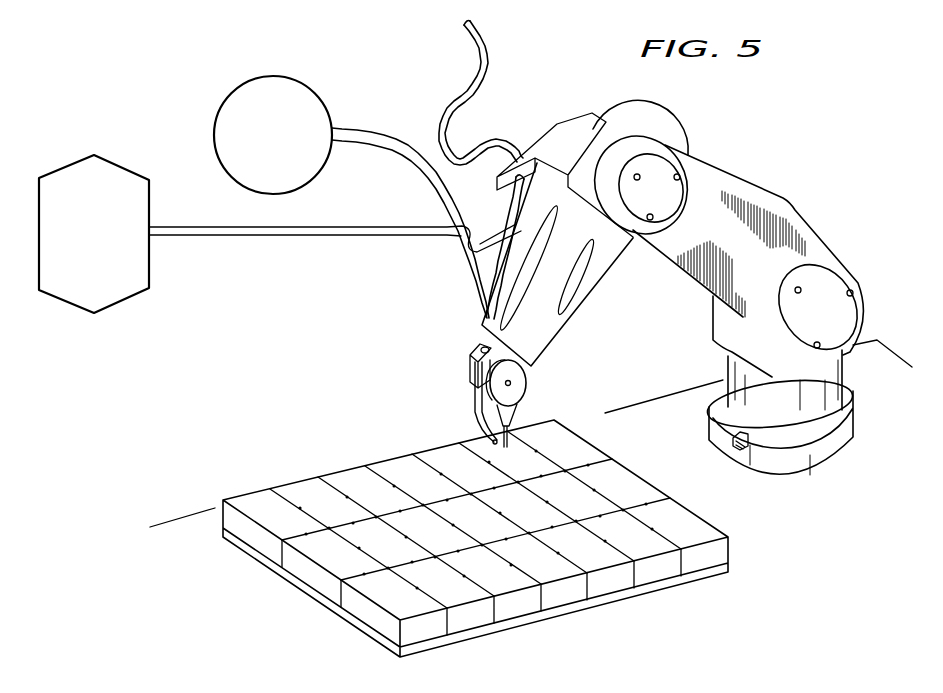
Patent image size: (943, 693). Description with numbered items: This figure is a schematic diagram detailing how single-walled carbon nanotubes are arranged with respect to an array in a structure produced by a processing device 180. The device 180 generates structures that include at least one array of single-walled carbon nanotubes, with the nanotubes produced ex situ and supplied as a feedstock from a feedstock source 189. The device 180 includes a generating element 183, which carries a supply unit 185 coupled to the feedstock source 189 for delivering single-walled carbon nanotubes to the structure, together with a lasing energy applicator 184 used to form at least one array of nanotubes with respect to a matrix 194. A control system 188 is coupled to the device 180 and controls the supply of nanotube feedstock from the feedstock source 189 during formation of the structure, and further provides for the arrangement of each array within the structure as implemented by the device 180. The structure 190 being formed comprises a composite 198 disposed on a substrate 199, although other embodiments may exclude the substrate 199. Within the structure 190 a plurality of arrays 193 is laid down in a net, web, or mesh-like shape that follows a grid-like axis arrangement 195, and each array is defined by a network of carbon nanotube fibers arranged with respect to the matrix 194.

The device 180 is at (770, 185).
The generating element 183 is at (562, 297).
The lasing energy applicator 184 is at (525, 398).
The supply unit 185 is at (462, 367).
The control system 188 is at (70, 163).
The feedstock source 189 is at (255, 78).
The structure 190 is at (294, 481).
The arrays 193 is at (373, 563).
The matrix 194 is at (318, 547).
The grid-like axis arrangement 195 is at (437, 497).
The composite 198 is at (731, 548).
The substrate 199 is at (731, 565).